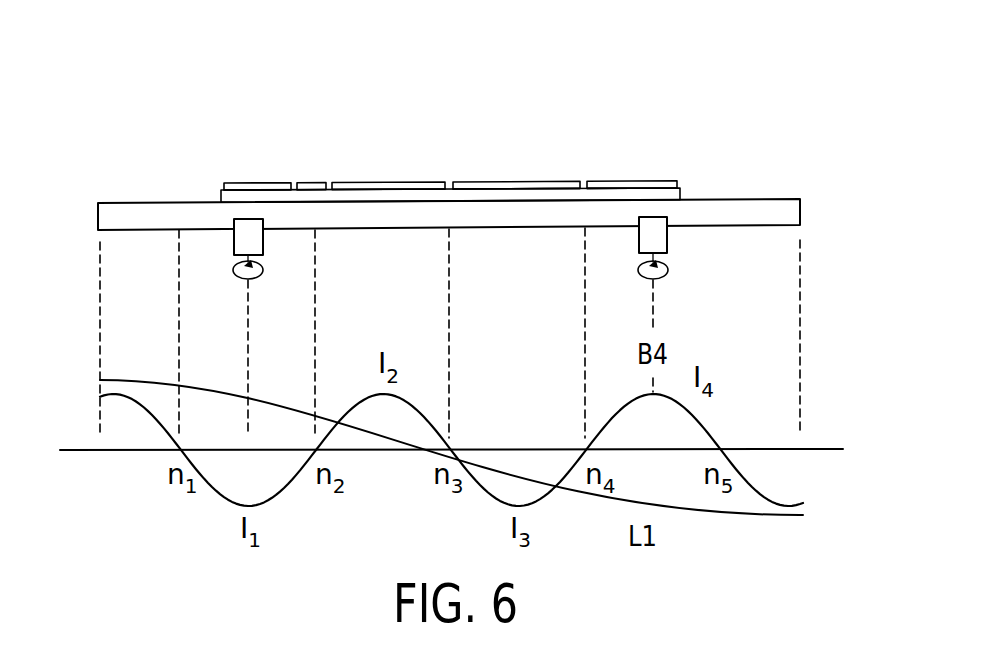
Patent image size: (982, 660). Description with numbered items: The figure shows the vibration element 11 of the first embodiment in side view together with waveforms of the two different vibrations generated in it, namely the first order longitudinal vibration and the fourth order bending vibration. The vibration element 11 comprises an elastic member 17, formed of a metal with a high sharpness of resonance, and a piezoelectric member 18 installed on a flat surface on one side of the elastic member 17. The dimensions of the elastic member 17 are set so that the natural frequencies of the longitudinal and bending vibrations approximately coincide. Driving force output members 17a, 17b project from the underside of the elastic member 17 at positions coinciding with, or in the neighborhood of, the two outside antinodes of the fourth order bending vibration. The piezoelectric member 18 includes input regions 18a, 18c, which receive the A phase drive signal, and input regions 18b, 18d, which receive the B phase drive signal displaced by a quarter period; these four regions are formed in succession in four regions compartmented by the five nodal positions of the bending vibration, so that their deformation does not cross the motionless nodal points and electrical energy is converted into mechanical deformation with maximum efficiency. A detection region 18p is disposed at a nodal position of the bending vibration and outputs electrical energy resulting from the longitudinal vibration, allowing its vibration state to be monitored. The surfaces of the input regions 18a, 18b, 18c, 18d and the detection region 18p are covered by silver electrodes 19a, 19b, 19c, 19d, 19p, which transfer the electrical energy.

The vibration element 11 is at (474, 201).
The elastic member 17 is at (792, 212).
The driving force output member 17a is at (235, 253).
The driving force output member 17b is at (667, 250).
The piezoelectric member 18 is at (682, 188).
The input region 18a is at (257, 196).
The input region 18b is at (363, 195).
The input region 18c is at (492, 193).
The input region 18d is at (613, 193).
The detection region 18p is at (310, 195).
The silver electrode 19a is at (277, 183).
The silver electrode 19b is at (398, 181).
The silver electrode 19c is at (523, 180).
The silver electrode 19d is at (647, 180).
The silver electrode 19p is at (317, 182).